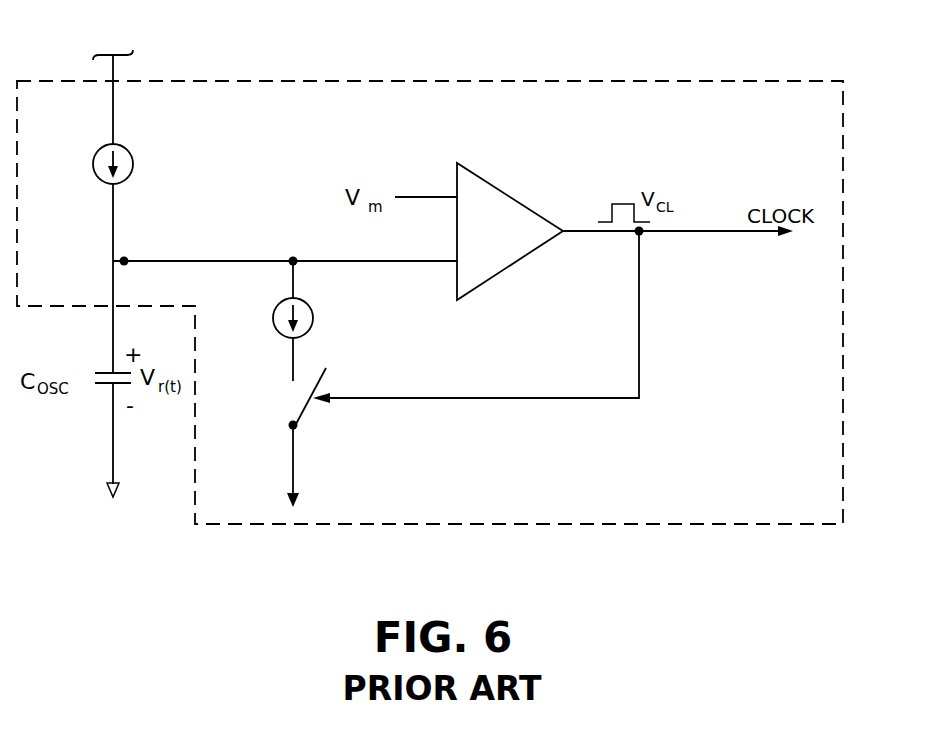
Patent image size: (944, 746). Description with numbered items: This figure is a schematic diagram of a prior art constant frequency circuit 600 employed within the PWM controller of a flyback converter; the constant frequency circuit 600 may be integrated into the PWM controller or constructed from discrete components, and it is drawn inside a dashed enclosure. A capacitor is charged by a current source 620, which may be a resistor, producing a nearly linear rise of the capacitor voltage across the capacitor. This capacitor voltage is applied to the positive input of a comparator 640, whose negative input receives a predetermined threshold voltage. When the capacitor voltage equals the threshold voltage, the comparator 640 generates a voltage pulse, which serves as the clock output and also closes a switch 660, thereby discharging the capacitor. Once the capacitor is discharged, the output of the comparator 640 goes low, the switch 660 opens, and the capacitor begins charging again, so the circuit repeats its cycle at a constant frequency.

The constant frequency circuit 600 is at (428, 81).
The current source 620 is at (142, 149).
The comparator 640 is at (510, 193).
The switch 660 is at (283, 403).